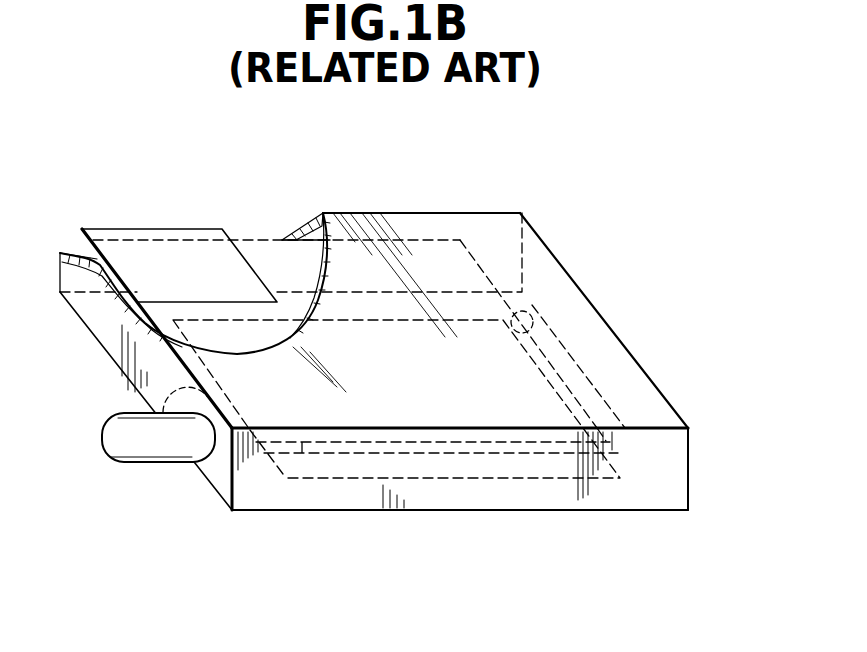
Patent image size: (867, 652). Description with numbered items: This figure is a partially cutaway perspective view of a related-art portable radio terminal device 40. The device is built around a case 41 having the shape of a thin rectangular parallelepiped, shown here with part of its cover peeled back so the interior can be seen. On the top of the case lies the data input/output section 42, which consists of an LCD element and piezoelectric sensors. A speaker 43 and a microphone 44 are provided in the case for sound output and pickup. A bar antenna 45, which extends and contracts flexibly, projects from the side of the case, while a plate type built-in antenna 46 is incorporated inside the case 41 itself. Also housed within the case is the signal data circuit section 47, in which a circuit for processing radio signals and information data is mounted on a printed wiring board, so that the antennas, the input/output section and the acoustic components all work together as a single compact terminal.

The portable radio terminal device 40 is at (618, 334).
The case 41 is at (414, 221).
The data input/output section 42 is at (440, 467).
The speaker 43 is at (240, 432).
The microphone 44 is at (534, 326).
The bar antenna 45 is at (153, 448).
The plate type built-in antenna 46 is at (152, 257).
The signal data circuit section 47 is at (552, 440).